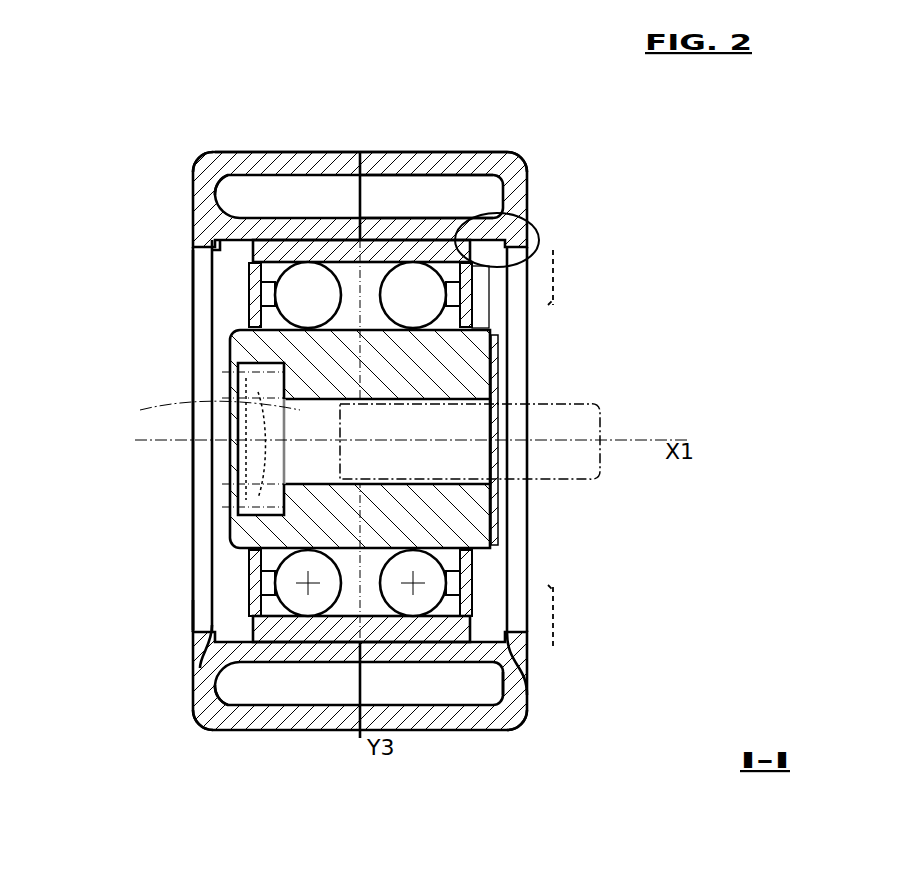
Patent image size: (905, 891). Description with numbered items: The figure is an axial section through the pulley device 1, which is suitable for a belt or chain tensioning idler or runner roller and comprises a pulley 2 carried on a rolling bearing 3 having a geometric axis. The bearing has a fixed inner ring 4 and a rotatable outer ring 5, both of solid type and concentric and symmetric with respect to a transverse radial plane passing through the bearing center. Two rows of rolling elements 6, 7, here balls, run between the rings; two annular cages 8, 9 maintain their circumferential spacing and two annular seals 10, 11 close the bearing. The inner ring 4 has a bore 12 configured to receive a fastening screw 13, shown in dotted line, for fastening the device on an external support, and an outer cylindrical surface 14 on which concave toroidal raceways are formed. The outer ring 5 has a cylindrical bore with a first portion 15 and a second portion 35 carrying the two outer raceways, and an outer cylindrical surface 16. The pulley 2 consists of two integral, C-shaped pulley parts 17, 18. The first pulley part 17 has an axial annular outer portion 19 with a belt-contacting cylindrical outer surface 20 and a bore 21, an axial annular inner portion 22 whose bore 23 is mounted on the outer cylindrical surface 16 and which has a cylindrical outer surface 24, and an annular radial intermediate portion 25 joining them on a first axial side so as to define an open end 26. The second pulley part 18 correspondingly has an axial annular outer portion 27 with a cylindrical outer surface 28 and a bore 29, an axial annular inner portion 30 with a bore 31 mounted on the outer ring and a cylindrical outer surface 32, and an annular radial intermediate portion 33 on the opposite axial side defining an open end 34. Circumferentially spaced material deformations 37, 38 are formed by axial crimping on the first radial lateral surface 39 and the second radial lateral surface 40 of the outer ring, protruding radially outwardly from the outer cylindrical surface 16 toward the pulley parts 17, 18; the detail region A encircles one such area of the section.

The pulley device 1 is at (195, 148).
The pulley 2 is at (527, 148).
The rolling bearing 3 is at (510, 292).
The inner ring 4 is at (195, 528).
The outer ring 5 is at (248, 270).
The rolling elements 6 is at (308, 439).
The rolling elements 7 is at (413, 439).
The annular cage 8 is at (250, 292).
The annular cage 9 is at (470, 580).
The annular seal 10 is at (252, 592).
The annular seal 11 is at (492, 300).
The bore 12 is at (250, 455).
The fastening screw 13 is at (600, 406).
The outer cylindrical surface 14 is at (232, 335).
The first portion 15 is at (250, 568).
The outer cylindrical surface 16 is at (232, 670).
The first pulley part 17 is at (253, 146).
The second pulley part 18 is at (490, 146).
The axial annular outer portion 19 is at (336, 152).
The cylindrical outer surface 20 is at (232, 736).
The cylindrical inner surface or bore 21 is at (243, 688).
The axial annular inner portion 22 is at (302, 152).
The cylindrical inner surface or bore 23 is at (217, 247).
The cylindrical outer surface 24 is at (240, 195).
The annular radial intermediate portion 25 is at (192, 190).
The open end 26 is at (368, 152).
The axial annular outer portion 27 is at (448, 150).
The cylindrical outer surface 28 is at (480, 732).
The cylindrical inner surface or bore 29 is at (500, 700).
The axial annular inner portion 30 is at (407, 152).
The cylindrical inner surface or bore 31 is at (492, 606).
The cylindrical outer surface 32 is at (495, 652).
The annular radial intermediate portion 33 is at (527, 185).
The open end 34 is at (338, 735).
The second portion 35 is at (455, 548).
The material deformations 37 is at (195, 628).
The material deformations 38 is at (553, 632).
The first radial lateral surface 39 is at (195, 606).
The second radial lateral surface 40 is at (553, 613).
The detail region A is at (540, 222).